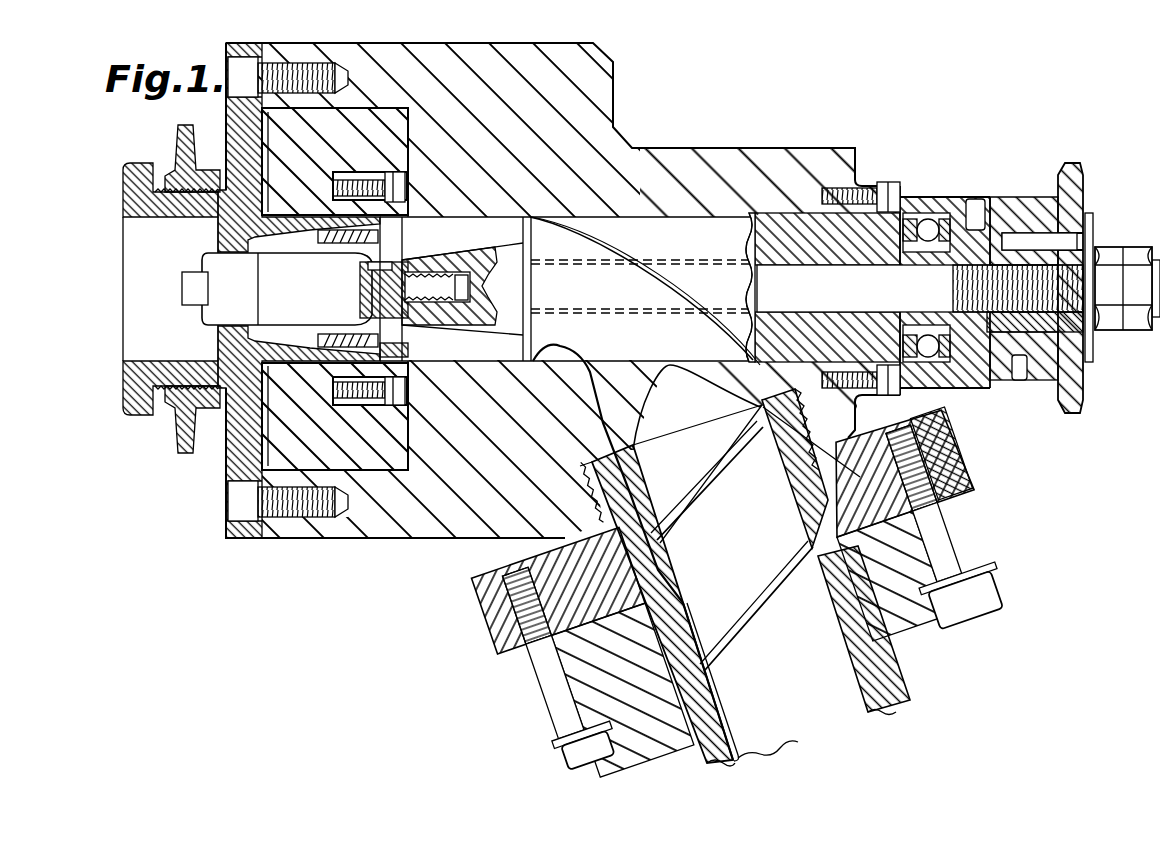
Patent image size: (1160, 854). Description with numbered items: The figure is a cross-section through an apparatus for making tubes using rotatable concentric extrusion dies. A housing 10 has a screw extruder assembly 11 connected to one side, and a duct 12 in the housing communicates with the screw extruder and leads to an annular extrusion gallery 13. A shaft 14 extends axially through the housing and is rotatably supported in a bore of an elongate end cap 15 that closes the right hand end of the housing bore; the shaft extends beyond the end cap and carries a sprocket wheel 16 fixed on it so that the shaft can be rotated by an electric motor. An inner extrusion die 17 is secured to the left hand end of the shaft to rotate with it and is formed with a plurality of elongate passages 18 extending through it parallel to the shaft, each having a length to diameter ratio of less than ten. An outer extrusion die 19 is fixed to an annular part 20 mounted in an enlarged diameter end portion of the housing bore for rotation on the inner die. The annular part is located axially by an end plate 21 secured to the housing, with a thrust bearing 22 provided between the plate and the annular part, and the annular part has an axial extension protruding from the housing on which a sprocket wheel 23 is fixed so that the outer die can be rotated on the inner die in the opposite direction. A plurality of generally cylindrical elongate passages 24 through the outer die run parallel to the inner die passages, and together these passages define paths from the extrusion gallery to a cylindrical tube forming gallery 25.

The housing 10 is at (640, 157).
The screw extruder assembly 11 is at (1024, 606).
The duct 12 is at (594, 382).
The annular extrusion gallery 13 is at (480, 340).
The shaft 14 is at (785, 293).
The elongate end cap 15 is at (888, 235).
The sprocket wheel 16 is at (1082, 372).
The inner extrusion die 17 is at (356, 262).
The elongate passages 18 is at (372, 323).
The outer extrusion die 19 is at (486, 322).
The annular part 20 is at (382, 460).
The end plate 21 is at (237, 487).
The thrust bearing 22 is at (255, 445).
The sprocket wheel 23 is at (186, 440).
The elongate passages 24 is at (398, 350).
The cylindrical tube forming gallery 25 is at (225, 330).